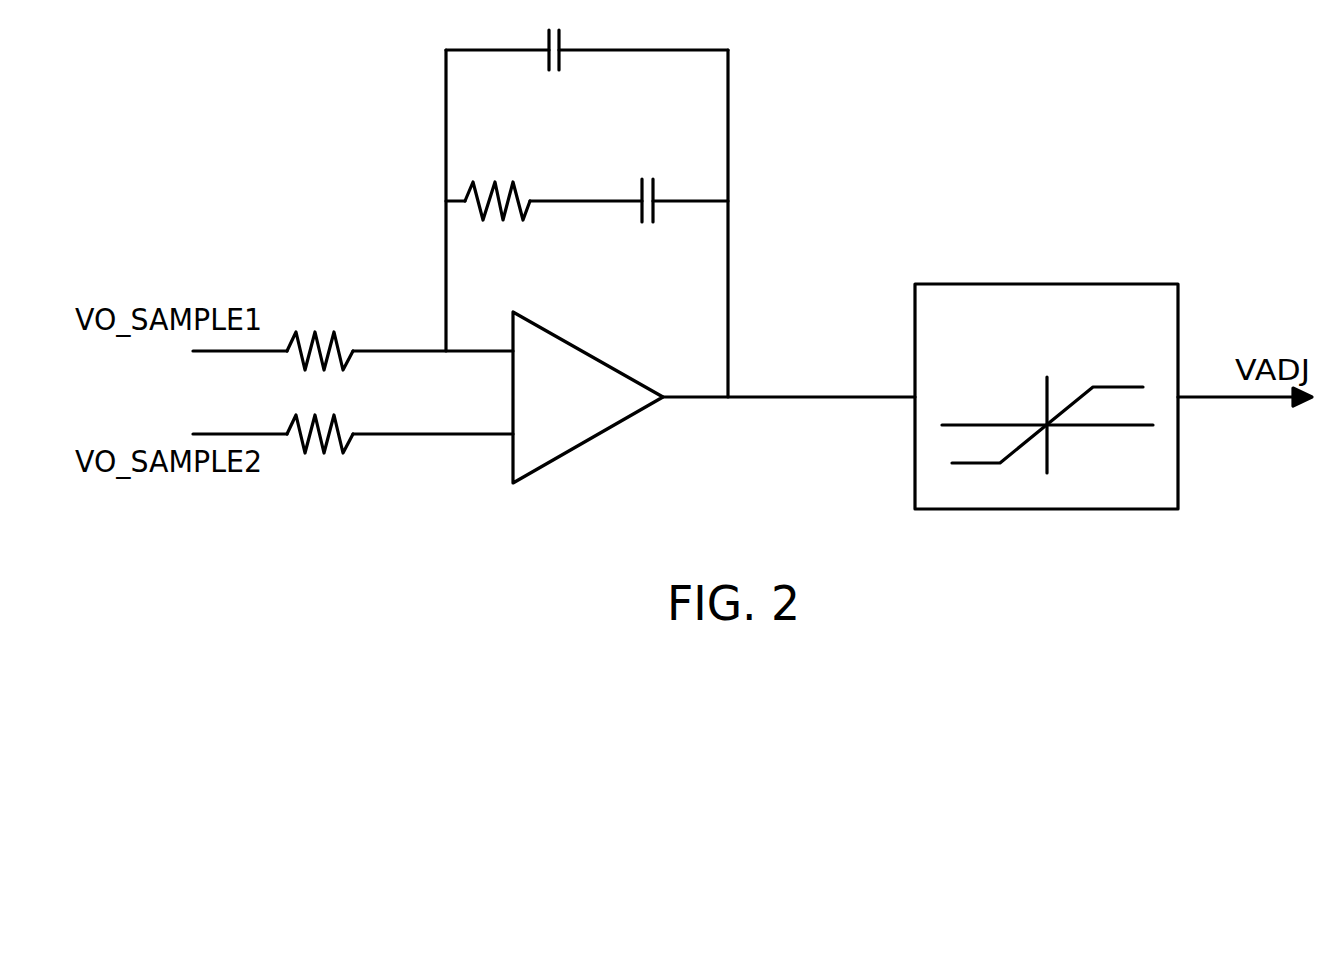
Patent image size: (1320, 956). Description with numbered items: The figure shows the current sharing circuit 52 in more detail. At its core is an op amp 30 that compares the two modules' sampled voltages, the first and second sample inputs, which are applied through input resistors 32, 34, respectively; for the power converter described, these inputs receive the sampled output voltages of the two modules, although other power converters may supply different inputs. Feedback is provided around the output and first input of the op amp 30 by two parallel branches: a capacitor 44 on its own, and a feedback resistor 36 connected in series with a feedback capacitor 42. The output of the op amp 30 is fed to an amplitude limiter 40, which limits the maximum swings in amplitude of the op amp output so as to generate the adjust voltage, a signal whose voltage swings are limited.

The op amp 30 is at (588, 397).
The input resistor 32 is at (344, 371).
The input resistor 34 is at (326, 454).
The feedback resistor 36 is at (505, 222).
The amplitude limiter 40 is at (1046, 396).
The feedback capacitor 42 is at (655, 223).
The capacitor 44 is at (561, 72).
The current sharing circuit 52 is at (378, 604).